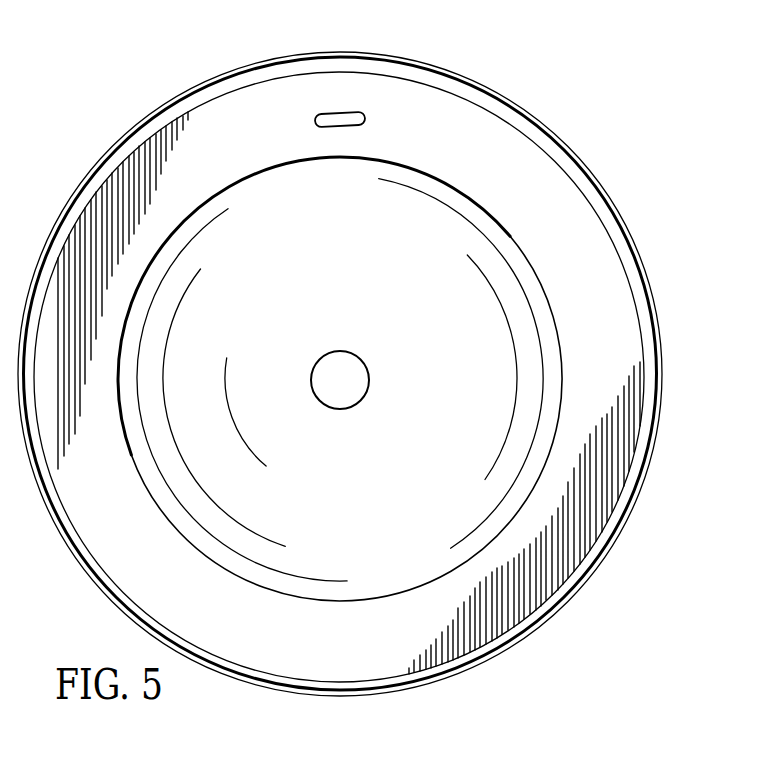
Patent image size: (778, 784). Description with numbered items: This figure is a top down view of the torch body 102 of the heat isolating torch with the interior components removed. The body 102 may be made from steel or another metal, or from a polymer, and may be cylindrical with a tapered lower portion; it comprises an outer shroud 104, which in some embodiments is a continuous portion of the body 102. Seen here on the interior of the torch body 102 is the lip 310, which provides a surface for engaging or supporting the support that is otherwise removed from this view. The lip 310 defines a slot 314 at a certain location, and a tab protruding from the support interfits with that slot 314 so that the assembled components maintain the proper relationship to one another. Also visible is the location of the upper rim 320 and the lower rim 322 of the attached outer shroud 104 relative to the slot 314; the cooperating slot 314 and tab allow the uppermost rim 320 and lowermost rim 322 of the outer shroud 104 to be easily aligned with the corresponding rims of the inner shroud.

The uppermost rim 320 is at (334, 47).
The lowermost rim 322 is at (343, 702).
The outer shroud 104 is at (523, 112).
The lip 310 is at (597, 275).
The body 102 is at (250, 503).
The slot 314 is at (340, 116).